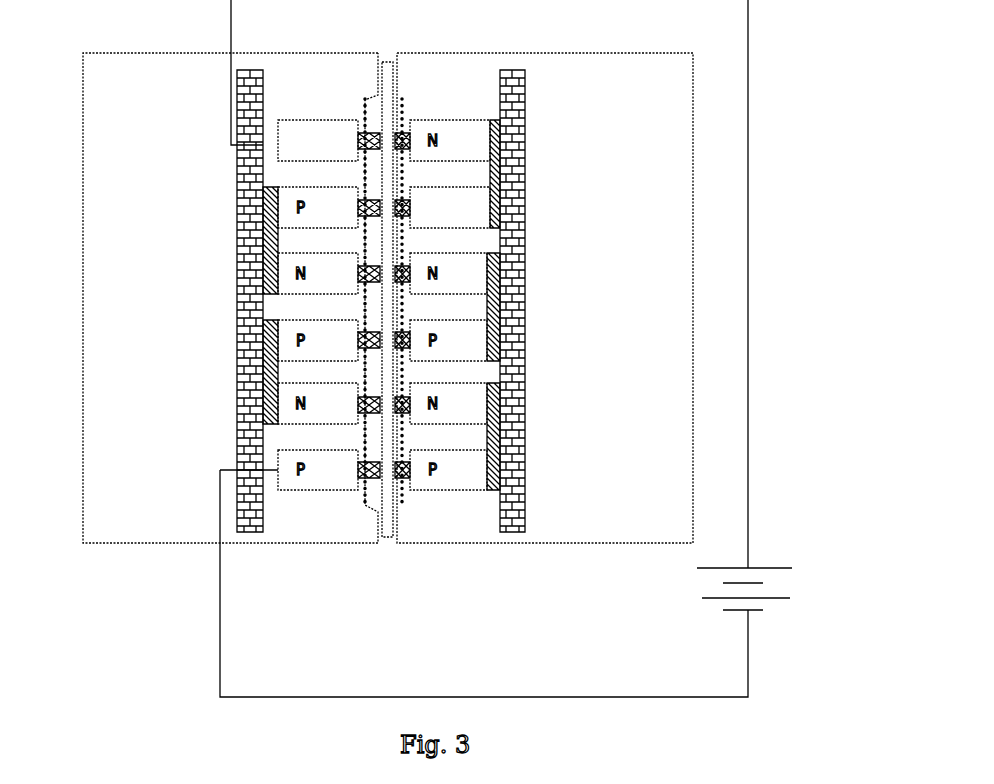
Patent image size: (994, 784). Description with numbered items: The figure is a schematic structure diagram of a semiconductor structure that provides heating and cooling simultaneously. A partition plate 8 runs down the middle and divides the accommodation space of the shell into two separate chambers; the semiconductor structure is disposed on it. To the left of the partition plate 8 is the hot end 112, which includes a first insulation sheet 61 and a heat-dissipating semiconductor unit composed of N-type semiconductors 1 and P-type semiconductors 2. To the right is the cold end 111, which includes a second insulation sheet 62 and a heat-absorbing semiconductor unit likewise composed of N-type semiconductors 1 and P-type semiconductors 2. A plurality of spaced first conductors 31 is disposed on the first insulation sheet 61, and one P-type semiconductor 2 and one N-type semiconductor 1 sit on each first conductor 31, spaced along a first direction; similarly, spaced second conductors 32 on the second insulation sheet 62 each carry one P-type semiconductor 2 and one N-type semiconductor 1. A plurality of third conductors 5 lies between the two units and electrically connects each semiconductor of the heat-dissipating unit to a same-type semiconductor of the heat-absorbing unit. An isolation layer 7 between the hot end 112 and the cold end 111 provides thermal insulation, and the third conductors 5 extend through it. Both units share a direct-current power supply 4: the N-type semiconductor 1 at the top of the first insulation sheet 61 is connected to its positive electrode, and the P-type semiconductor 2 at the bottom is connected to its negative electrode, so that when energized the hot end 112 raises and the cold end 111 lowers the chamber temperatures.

The N-type semiconductor 1 is at (288, 127).
The P-type semiconductor 2 is at (462, 210).
The direct-current power supply 4 is at (758, 568).
The third conductor 5 is at (398, 510).
The isolation layer 7 is at (395, 172).
The partition plate 8 is at (388, 537).
The first conductor 31 is at (268, 423).
The second conductor 32 is at (490, 488).
The first insulation sheet 61 is at (263, 77).
The second insulation sheet 62 is at (500, 80).
The cold end 111 is at (608, 495).
The hot end 112 is at (127, 515).